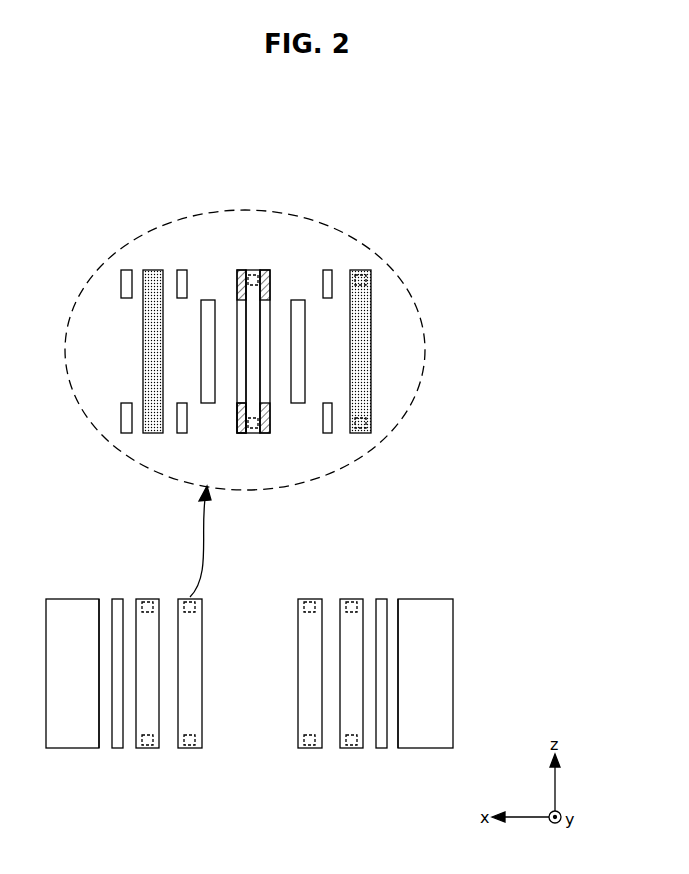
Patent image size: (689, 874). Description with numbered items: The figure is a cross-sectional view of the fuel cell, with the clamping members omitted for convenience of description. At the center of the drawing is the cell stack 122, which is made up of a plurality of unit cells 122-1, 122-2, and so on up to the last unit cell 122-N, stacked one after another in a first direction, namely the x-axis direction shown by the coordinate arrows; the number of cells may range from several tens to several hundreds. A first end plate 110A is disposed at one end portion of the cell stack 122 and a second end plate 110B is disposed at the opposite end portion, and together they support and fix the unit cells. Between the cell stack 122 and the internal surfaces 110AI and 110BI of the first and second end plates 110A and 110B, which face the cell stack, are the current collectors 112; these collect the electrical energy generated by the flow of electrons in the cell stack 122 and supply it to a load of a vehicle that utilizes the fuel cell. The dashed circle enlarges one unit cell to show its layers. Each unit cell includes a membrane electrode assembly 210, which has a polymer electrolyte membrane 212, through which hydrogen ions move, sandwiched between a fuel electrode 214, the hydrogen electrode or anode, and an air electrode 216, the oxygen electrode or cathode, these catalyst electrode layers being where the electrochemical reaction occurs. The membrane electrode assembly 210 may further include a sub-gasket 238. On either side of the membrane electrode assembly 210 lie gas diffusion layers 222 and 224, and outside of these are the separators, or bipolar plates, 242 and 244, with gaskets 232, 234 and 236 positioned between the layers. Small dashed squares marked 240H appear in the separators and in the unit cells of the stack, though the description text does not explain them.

The membrane electrode assembly 210 is at (302, 131).
The polymer electrolyte membrane 212 is at (253, 280).
The fuel electrode 214 is at (239, 316).
The air electrode 216 is at (266, 316).
The gas diffusion layer 222 is at (207, 300).
The gas diffusion layer 224 is at (298, 300).
The gasket 232 is at (183, 270).
The gasket 234 is at (126, 270).
The gasket 236 is at (328, 270).
The sub-gasket 238 is at (240, 430).
The separator 242 is at (153, 270).
The separator 244 is at (360, 270).
The hole 240H is at (362, 283).
The first end plate 110A is at (72, 599).
The second end plate 110B is at (430, 599).
The current collector 112 is at (117, 599).
The cell stack 122 is at (383, 804).
The unit cell 122-1 is at (140, 749).
The unit cell 122-2 is at (197, 749).
The unit cell 122-N is at (360, 749).
The internal surface of first end plate 110AI is at (99, 748).
The internal surface of second end plate 110BI is at (398, 748).